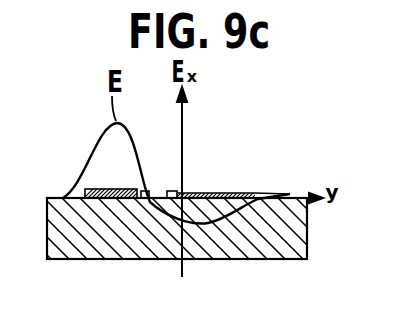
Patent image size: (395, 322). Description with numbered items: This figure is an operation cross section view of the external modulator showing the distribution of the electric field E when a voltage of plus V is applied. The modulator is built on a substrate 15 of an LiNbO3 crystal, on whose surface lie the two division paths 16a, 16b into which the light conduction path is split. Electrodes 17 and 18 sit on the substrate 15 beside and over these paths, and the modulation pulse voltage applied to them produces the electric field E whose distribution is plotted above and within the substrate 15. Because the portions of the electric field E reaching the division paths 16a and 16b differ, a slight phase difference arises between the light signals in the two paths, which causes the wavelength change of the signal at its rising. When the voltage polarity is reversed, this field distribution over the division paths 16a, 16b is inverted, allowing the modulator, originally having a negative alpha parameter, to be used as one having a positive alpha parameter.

The substrate 15 is at (227, 245).
The division path 16a is at (146, 190).
The division path 16b is at (173, 190).
The electrode 17 is at (100, 190).
The electrode 18 is at (231, 190).